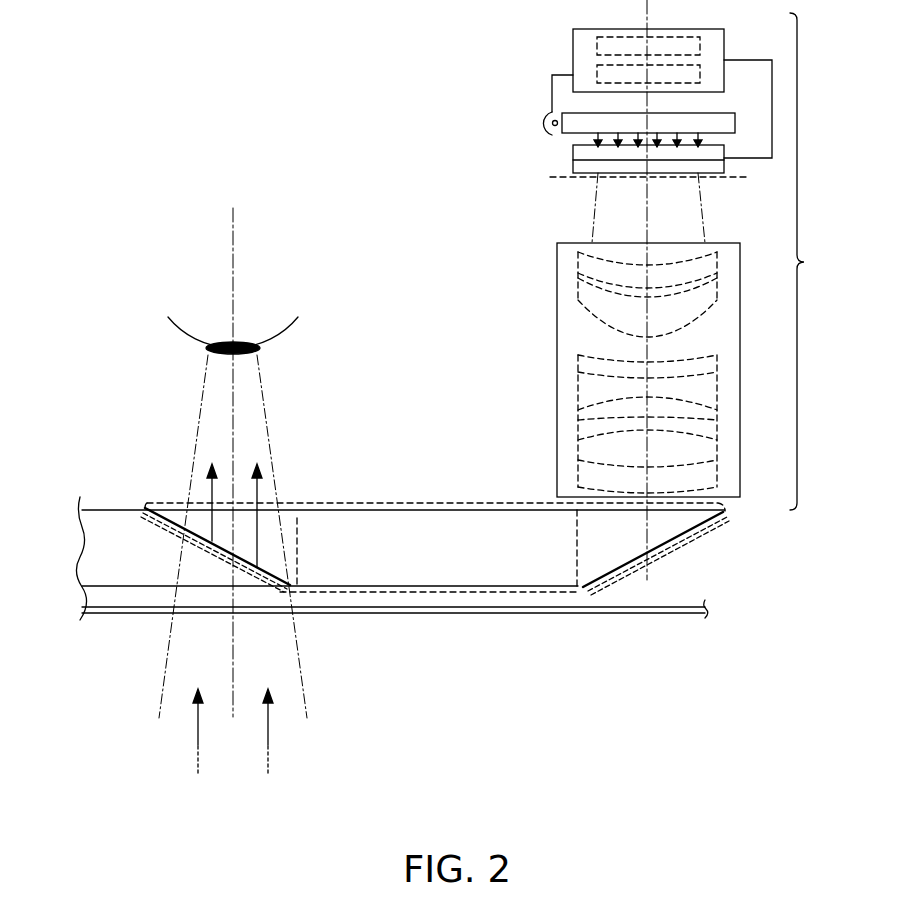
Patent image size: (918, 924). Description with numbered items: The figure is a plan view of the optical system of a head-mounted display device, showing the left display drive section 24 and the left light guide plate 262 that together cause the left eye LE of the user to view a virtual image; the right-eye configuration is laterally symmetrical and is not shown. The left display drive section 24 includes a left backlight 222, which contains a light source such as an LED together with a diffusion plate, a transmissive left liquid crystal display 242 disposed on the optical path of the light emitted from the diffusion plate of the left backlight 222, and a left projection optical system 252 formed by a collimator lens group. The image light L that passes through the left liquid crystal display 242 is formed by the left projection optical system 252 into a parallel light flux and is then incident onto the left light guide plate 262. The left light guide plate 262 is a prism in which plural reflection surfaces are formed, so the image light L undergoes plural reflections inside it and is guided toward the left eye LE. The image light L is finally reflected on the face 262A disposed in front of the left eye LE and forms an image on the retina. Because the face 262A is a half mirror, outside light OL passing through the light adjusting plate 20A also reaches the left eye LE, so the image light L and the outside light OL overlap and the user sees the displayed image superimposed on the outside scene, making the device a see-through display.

The left backlight 222 is at (545, 73).
The left liquid crystal display 242 is at (577, 165).
The left projection optical system 252 is at (558, 278).
The left display drive section 24 is at (813, 261).
The light adjusting plate 20A is at (668, 613).
The left light guide plate 262 is at (590, 593).
The face 262A is at (218, 565).
The left eye LE is at (180, 335).
The image light L is at (648, 228).
The outside light OL is at (195, 737).